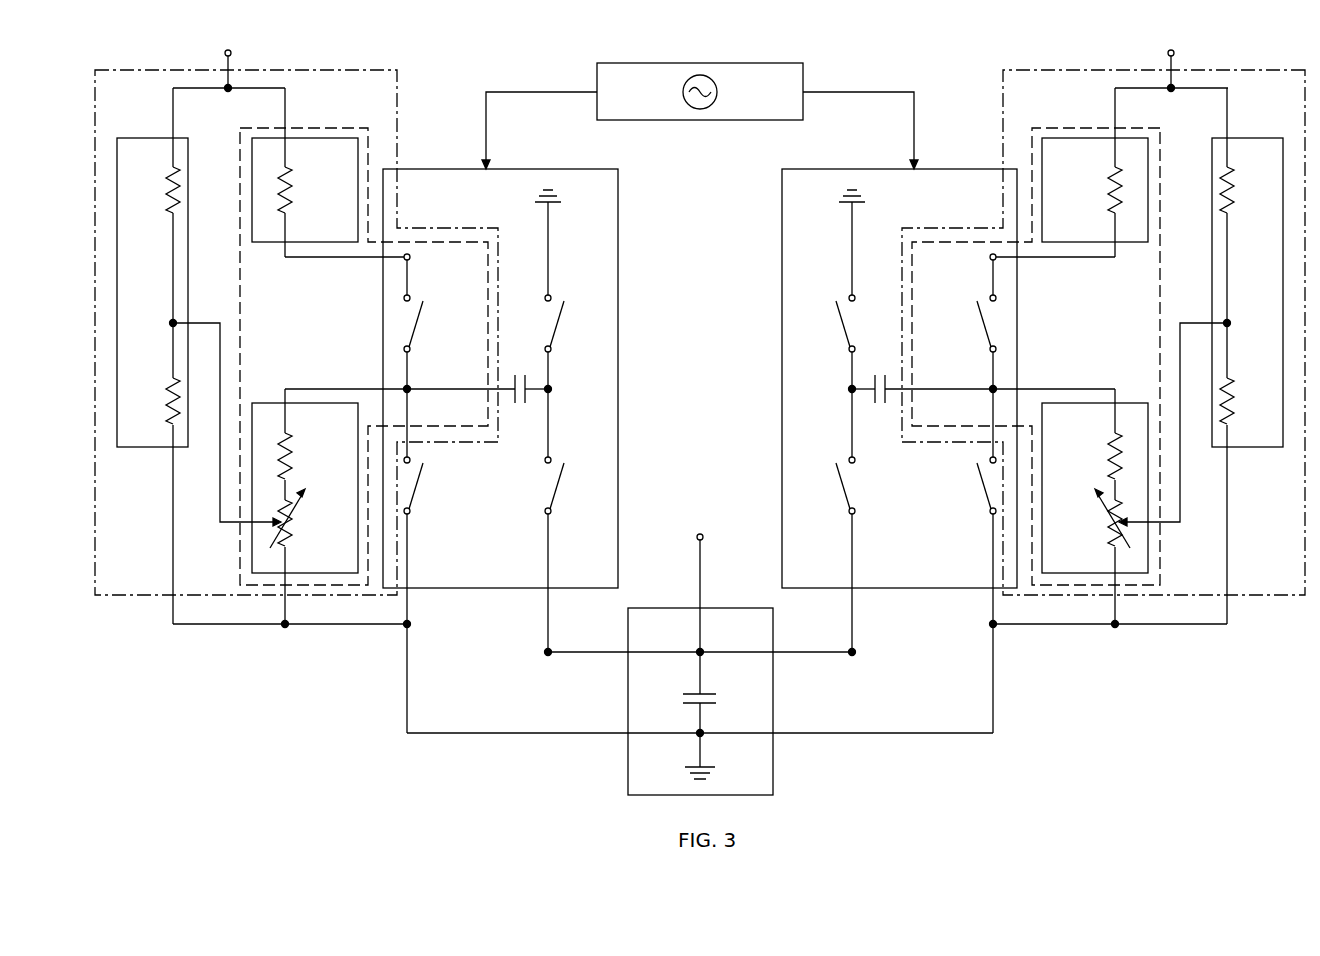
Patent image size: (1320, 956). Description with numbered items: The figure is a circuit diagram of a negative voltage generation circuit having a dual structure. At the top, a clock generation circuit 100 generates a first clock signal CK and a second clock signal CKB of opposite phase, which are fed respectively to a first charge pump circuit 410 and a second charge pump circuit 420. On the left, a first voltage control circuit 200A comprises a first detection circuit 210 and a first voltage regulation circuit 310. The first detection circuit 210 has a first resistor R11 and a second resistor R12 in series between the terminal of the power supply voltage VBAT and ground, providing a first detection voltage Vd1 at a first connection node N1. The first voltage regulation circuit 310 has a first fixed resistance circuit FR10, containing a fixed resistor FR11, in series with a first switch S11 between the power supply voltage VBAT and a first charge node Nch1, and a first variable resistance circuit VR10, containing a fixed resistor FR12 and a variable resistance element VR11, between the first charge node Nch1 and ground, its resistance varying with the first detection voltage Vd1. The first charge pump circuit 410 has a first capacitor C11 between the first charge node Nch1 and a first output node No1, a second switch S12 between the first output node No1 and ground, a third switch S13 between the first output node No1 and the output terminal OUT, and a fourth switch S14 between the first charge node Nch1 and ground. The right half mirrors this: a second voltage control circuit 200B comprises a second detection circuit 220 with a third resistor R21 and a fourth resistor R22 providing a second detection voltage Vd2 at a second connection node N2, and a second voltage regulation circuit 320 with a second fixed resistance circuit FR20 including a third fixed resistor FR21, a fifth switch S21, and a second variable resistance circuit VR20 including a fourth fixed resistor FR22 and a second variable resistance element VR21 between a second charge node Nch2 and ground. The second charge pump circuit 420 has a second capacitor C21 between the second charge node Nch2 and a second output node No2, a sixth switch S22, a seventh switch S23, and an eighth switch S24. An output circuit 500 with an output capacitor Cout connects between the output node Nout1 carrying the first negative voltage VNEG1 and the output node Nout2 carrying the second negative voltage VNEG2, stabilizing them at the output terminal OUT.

The clock generation circuit 100 is at (778, 63).
The first voltage control circuit 200A is at (372, 70).
The second voltage control circuit 200B is at (1028, 70).
The first detection circuit 210 is at (152, 137).
The second detection circuit 220 is at (1250, 138).
The first voltage regulation circuit 310 is at (340, 128).
The second voltage regulation circuit 320 is at (1057, 128).
The first charge pump circuit 410 is at (565, 168).
The second charge pump circuit 420 is at (835, 168).
The output circuit 500 is at (727, 608).
The first resistor R11 is at (151, 190).
The second resistor R12 is at (151, 401).
The third resistor R21 is at (1249, 190).
The fourth resistor R22 is at (1248, 401).
The first fixed resistance circuit FR10 is at (268, 243).
The fixed resistor FR11 is at (314, 190).
The fixed resistor FR12 is at (313, 456).
The second fixed resistance circuit FR20 is at (1132, 243).
The third fixed resistor FR21 is at (1086, 190).
The fourth fixed resistor FR22 is at (1084, 456).
The first variable resistance circuit VR10 is at (268, 402).
The variable resistance element VR11 is at (310, 518).
The second variable resistance circuit VR20 is at (1132, 402).
The second variable resistance element VR21 is at (1091, 518).
The first switch S11 is at (434, 303).
The second switch S12 is at (576, 323).
The third switch S13 is at (576, 485).
The fourth switch S14 is at (434, 485).
The fifth switch S21 is at (966, 303).
The sixth switch S22 is at (822, 323).
The seventh switch S23 is at (822, 485).
The eighth switch S24 is at (966, 485).
The first capacitor C11 is at (522, 406).
The second capacitor C21 is at (877, 406).
The output capacitor Cout is at (719, 686).
The first connection node N1 is at (170, 317).
The second connection node N2 is at (1233, 314).
The first detection voltage Vd1 is at (227, 412).
The second detection voltage Vd2 is at (1173, 412).
The power supply voltage VBAT is at (698, 58).
The first clock signal CK is at (539, 130).
The second clock signal CKB is at (860, 130).
The first charge node Nch1 is at (415, 383).
The second charge node Nch2 is at (985, 385).
The first output node No1 is at (550, 391).
The second output node No2 is at (850, 391).
The output node of the first charge pump circuit Nout1 is at (543, 657).
The output node of the second charge pump circuit Nout2 is at (857, 657).
The first negative voltage VNEG1 is at (624, 638).
The second negative voltage VNEG2 is at (776, 638).
The output terminal OUT is at (694, 597).